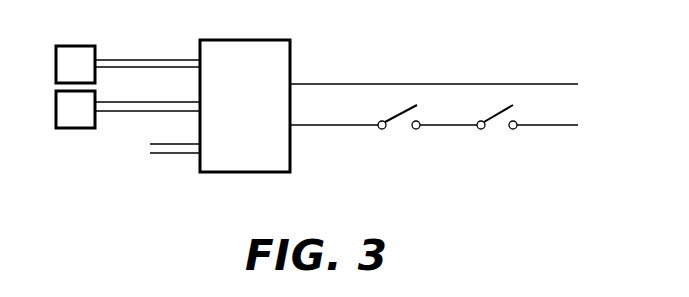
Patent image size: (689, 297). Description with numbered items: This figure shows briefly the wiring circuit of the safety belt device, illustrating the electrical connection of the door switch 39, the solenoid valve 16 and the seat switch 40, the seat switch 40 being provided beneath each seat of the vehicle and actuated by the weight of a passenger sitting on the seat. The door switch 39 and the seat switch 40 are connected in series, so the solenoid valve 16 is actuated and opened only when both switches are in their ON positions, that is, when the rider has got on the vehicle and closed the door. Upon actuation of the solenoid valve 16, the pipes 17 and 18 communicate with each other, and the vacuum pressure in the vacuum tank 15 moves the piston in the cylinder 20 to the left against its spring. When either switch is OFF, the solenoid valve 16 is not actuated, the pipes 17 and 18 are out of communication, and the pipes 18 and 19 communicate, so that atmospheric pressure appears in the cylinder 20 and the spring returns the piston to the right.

The vacuum tank 15 is at (66, 74).
The solenoid valve 16 is at (236, 110).
The pipe 17 is at (148, 58).
The pipe 18 is at (138, 102).
The pipe 19 is at (160, 153).
The cylinder 20 is at (66, 119).
The door switch 39 is at (500, 128).
The seat switch 40 is at (401, 128).